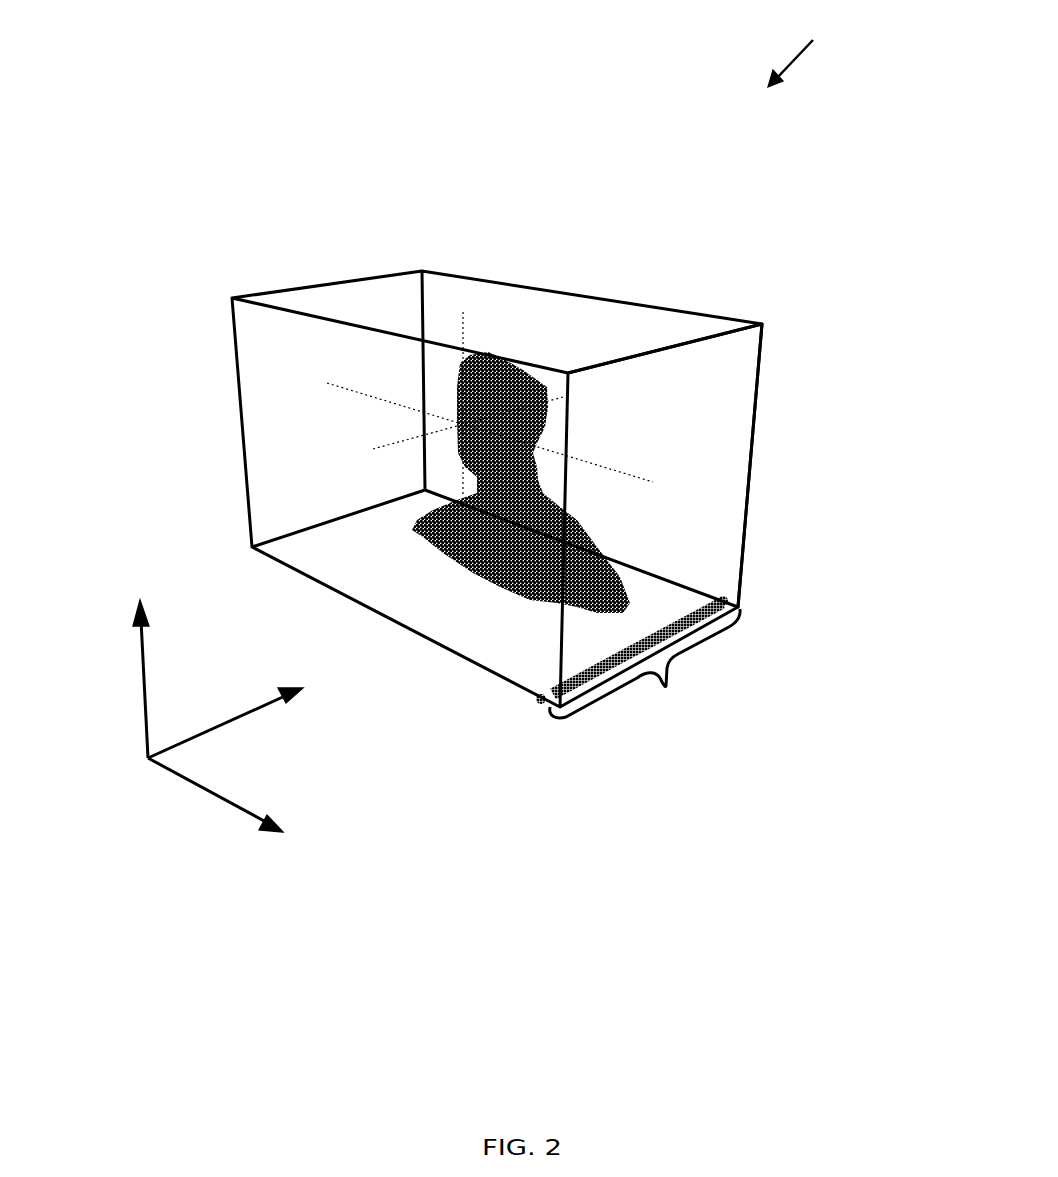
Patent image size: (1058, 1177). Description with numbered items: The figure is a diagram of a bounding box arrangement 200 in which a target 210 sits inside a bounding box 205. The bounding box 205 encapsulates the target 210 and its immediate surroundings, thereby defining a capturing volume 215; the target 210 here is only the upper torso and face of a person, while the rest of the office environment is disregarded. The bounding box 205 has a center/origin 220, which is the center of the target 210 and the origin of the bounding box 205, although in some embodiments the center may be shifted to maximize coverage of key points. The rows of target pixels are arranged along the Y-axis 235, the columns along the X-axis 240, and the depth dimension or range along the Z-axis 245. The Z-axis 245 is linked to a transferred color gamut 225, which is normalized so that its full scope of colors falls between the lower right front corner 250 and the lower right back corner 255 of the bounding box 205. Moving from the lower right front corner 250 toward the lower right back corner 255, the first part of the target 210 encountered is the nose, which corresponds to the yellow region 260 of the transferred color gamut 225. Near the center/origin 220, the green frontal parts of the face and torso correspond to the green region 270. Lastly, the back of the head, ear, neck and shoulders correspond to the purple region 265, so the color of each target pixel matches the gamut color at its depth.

The bounding box arrangement 200 is at (850, 31).
The bounding box 205 is at (332, 280).
The target 210 is at (508, 362).
The capturing volume 215 is at (653, 370).
The center/origin 220 is at (460, 425).
The transferred color gamut 225 is at (667, 687).
The Y-axis 235 is at (145, 715).
The X-axis 240 is at (287, 832).
The Z-axis 245 is at (267, 698).
The lower right front corner 250 is at (552, 717).
The lower right back corner 255 is at (742, 594).
The yellow region 260 is at (620, 663).
The purple region 265 is at (730, 615).
The green region 270 is at (630, 640).